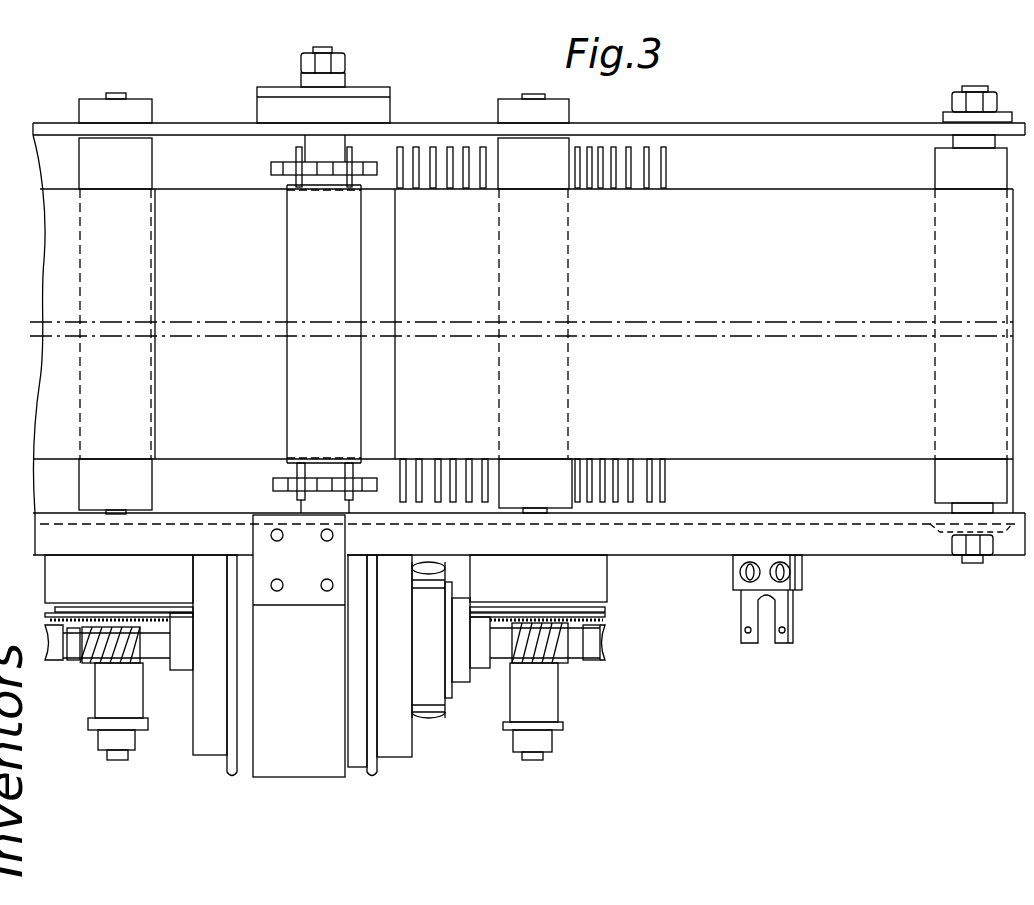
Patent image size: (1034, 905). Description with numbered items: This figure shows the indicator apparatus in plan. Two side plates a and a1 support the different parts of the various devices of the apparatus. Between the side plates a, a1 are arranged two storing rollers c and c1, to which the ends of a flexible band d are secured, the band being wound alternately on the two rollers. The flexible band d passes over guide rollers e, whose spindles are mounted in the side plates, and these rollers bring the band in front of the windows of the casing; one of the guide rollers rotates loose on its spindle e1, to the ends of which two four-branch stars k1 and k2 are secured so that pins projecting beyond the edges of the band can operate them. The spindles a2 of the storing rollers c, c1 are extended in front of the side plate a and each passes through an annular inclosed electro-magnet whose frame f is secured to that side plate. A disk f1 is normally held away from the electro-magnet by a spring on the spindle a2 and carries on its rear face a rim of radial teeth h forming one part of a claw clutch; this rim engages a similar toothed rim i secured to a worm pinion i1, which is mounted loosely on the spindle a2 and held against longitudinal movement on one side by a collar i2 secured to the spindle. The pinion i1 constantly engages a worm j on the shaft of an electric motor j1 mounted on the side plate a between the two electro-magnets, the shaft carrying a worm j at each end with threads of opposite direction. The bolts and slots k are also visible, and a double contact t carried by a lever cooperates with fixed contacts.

The side plate a is at (100, 525).
The side plate a1 is at (182, 131).
The spindle a2 is at (123, 762).
The storing roller c is at (115, 303).
The storing roller c1 is at (535, 303).
The flexible band d is at (521, 324).
The guide roller e is at (634, 305).
The spindle e1 is at (327, 152).
The frame f is at (326, 579).
The disk f1 is at (40, 616).
The radial teeth h is at (52, 625).
The toothed rim i is at (363, 666).
The worm pinion i1 is at (627, 677).
The collar i2 is at (128, 738).
The worm j is at (142, 663).
The electric motor j1 is at (247, 733).
The bolt / slot k is at (295, 153).
The four-branch star k1 is at (273, 483).
The four-branch star k2 is at (272, 167).
The double contact t is at (783, 607).